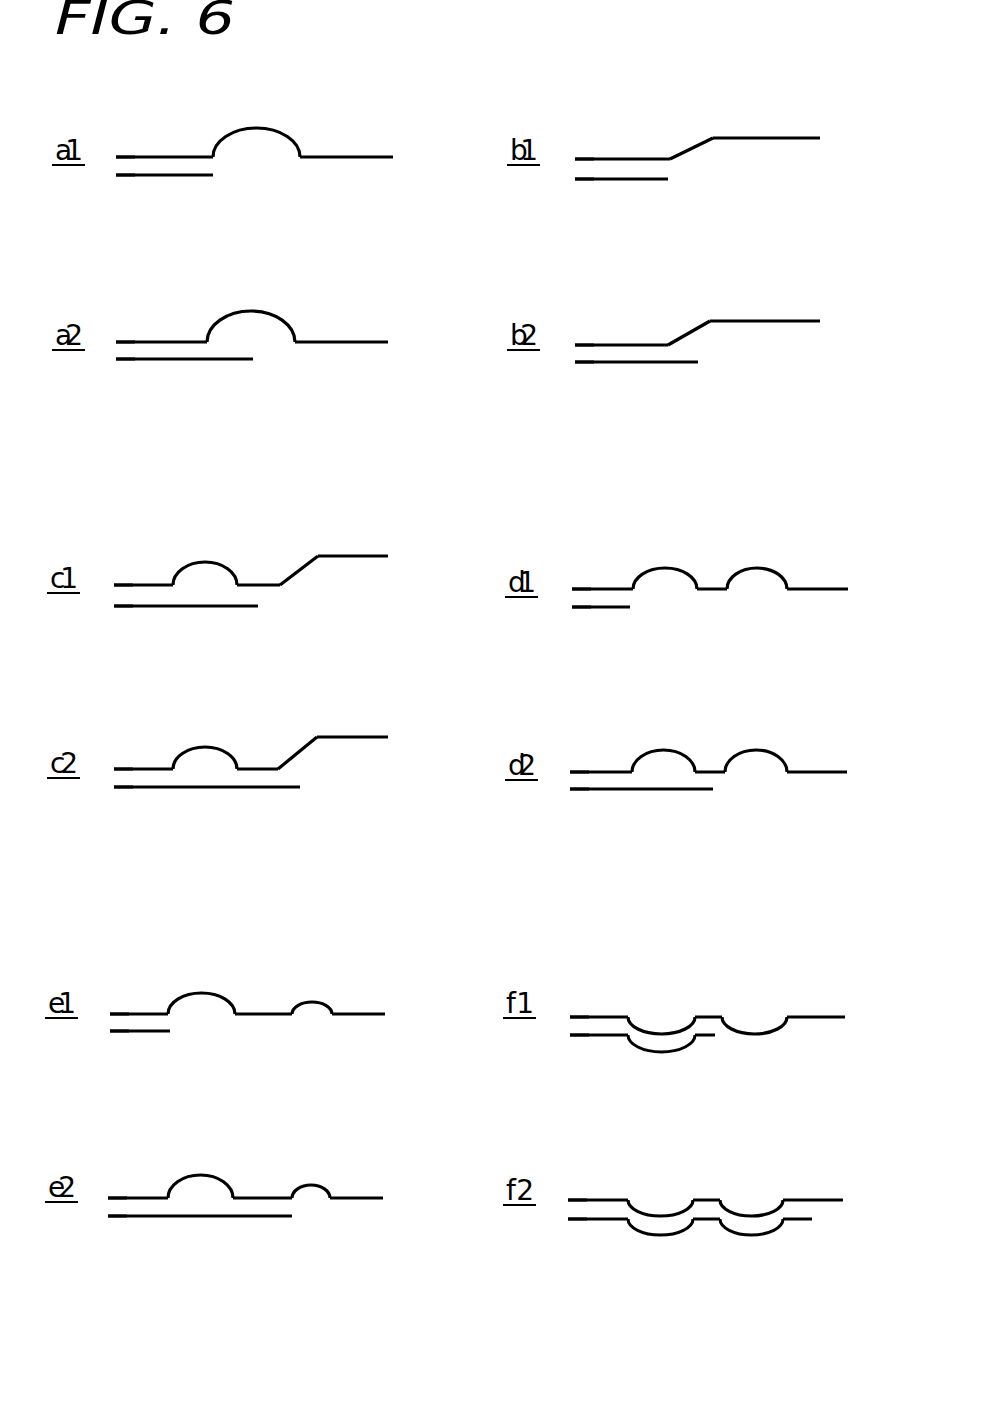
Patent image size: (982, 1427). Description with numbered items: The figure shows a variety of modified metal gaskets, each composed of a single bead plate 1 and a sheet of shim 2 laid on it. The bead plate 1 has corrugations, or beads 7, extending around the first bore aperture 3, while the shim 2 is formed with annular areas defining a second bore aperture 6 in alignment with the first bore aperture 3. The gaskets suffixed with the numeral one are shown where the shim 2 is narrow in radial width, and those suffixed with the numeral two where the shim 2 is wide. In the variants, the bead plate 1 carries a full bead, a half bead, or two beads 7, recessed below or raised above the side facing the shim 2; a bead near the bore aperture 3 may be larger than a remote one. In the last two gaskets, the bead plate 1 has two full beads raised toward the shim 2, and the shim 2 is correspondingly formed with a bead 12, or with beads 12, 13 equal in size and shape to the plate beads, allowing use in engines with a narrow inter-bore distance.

The bead plate 1 is at (482, 645).
The shim 2 is at (460, 740).
The first bore aperture 3 is at (353, 650).
The second bore aperture 6 is at (349, 726).
The bead 7 is at (490, 652).
The bead of shim 12 is at (672, 1167).
The bead of shim 13 is at (762, 1257).